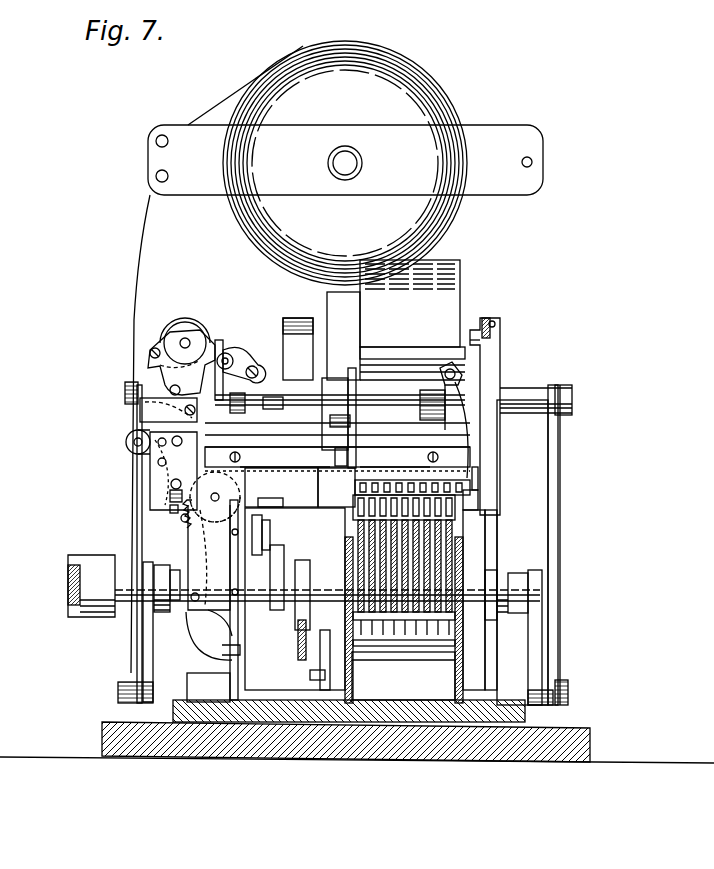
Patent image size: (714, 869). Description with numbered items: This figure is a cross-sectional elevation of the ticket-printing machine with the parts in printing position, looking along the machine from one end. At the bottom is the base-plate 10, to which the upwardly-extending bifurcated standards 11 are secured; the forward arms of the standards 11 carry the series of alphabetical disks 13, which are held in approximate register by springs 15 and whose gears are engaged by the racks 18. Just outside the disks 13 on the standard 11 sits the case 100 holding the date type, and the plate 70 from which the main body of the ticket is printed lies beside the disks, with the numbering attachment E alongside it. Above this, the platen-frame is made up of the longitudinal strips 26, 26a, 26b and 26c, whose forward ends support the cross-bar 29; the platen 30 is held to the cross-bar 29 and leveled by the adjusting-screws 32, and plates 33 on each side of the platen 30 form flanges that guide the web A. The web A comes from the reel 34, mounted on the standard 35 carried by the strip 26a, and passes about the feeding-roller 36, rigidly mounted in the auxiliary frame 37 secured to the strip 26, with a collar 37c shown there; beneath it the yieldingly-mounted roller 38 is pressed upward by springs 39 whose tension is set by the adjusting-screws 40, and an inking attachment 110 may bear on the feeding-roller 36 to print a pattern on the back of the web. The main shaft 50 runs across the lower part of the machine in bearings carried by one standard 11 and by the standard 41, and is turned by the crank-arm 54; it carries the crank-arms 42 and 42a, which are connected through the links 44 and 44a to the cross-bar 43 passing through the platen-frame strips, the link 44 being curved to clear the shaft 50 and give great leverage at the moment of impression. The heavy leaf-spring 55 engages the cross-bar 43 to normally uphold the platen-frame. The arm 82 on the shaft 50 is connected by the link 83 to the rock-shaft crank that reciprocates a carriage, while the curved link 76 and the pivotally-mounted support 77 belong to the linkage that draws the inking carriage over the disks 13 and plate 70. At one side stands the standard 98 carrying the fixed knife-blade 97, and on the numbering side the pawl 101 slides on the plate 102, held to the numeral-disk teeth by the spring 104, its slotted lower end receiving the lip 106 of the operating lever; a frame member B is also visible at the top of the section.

The base-plate 10 is at (390, 710).
The bifurcated standards 11 is at (371, 599).
The alphabetical disks 13 is at (356, 482).
The springs 15 is at (404, 599).
The racks 18 is at (460, 503).
The platen-frame strip 26 is at (337, 459).
The platen-frame strip 26a is at (354, 457).
The platen-frame strip 26b is at (462, 390).
The bar stud 26c is at (449, 457).
The cross-bar 29 is at (337, 435).
The platen 30 is at (395, 457).
The adjusting-screws 32 is at (238, 408).
The plates 33 is at (285, 457).
The reel 34 is at (360, 164).
The standard 35 is at (343, 336).
The feeding-roller 36 is at (170, 416).
The auxiliary frame 37 is at (152, 470).
The collar 37c is at (333, 422).
The yieldingly-mounted roller 38 is at (172, 488).
The springs 39 is at (172, 512).
The adjusting-screws 40 is at (183, 522).
The standard 41 is at (208, 687).
The crank-arm 42 is at (161, 632).
The crank-arm 42a is at (519, 637).
The cross-bar 43 is at (513, 397).
The link 44 is at (128, 542).
The link 44a is at (575, 545).
The main shaft 50 is at (310, 580).
The crank-arm 54 is at (68, 588).
The leaf-spring 55 is at (298, 349).
The plate 70 is at (281, 487).
The curved link 76 is at (298, 660).
The pivotally-mounted support 77 is at (325, 660).
The arm 82 is at (272, 580).
The link 83 is at (265, 535).
The fixed knife-blade 97 is at (467, 331).
The standard 98 is at (497, 358).
The case 100 is at (478, 478).
The pawl 101 is at (208, 635).
The plate 102 is at (213, 600).
The spring 104 is at (204, 519).
The lip 106 is at (223, 653).
The inking attachment 110 is at (207, 347).
The web A is at (145, 228).
The block B is at (412, 320).
The numbering attachment E is at (223, 497).